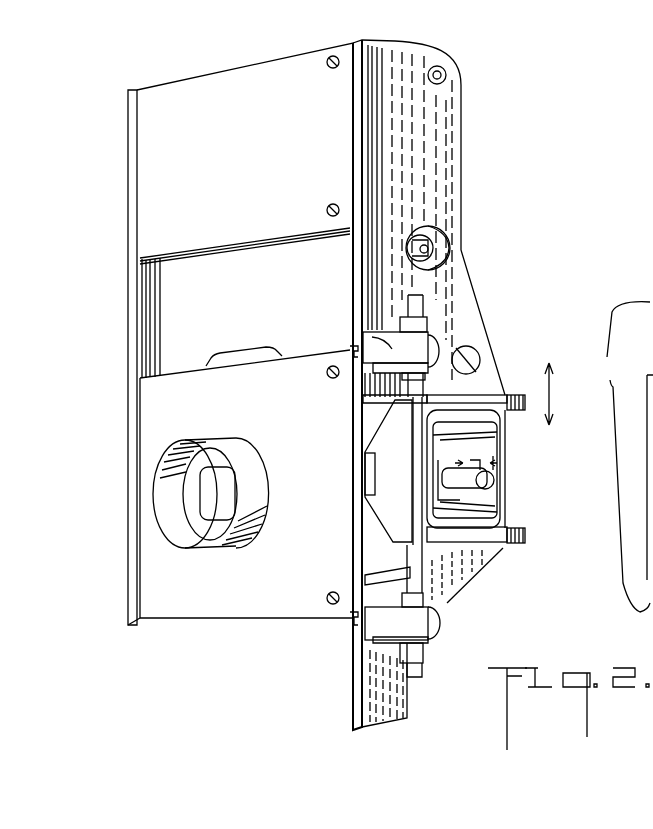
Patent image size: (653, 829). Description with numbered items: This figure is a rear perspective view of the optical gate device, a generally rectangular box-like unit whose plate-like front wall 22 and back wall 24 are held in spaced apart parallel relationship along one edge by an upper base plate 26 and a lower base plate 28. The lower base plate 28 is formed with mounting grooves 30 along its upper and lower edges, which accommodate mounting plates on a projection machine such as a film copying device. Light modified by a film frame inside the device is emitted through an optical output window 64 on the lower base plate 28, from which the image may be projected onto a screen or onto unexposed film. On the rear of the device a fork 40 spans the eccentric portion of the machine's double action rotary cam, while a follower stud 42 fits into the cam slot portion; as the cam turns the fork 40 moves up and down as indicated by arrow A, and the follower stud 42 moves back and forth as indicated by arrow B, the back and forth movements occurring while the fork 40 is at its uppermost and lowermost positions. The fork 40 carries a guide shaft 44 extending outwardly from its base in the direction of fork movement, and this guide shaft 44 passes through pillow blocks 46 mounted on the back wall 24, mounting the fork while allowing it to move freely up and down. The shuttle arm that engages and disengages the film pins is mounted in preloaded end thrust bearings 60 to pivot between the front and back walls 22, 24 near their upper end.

The front wall 22 is at (125, 170).
The back wall 24 is at (452, 119).
The upper base plate 26 is at (246, 80).
The lower base plate 28 is at (248, 606).
The mounting grooves 30 is at (357, 353).
The fork 40 is at (510, 546).
The follower stud 42 is at (492, 483).
The guide shaft 44 is at (416, 308).
The pillow blocks 46 is at (393, 347).
The preloaded end thrust bearings 60 is at (447, 75).
The optical output window 64 is at (210, 508).
The arrow A is at (553, 398).
The arrow B is at (480, 468).